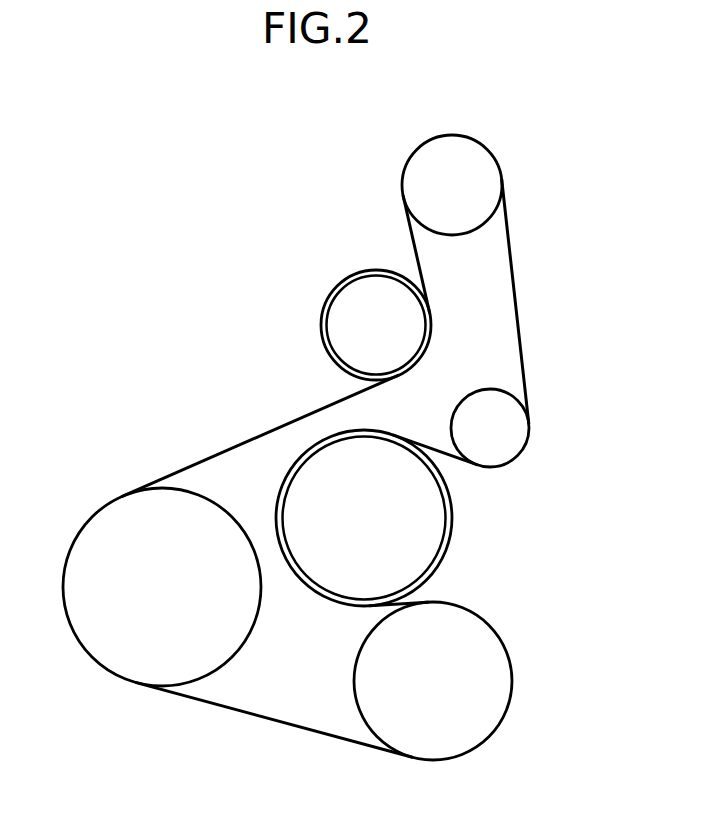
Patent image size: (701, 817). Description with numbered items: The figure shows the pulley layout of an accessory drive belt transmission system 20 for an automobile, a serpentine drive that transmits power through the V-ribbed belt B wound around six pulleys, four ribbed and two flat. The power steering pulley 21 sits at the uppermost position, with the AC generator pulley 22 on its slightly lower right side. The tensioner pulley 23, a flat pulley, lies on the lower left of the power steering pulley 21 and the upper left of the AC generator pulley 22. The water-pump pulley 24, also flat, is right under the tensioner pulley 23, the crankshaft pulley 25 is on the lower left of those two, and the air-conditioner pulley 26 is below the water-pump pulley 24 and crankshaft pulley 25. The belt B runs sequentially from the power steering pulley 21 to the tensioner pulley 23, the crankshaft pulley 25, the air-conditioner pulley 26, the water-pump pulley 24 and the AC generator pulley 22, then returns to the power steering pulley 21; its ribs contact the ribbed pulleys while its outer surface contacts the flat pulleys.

The accessory drive belt transmission system 20 is at (240, 165).
The V-ribbed belt B is at (268, 431).
The power steering pulley 21 is at (482, 162).
The AC generator pulley 22 is at (507, 442).
The tensioner pulley 23 is at (355, 292).
The water-pump pulley 24 is at (432, 520).
The crankshaft pulley 25 is at (116, 660).
The air-conditioner pulley 26 is at (497, 678).